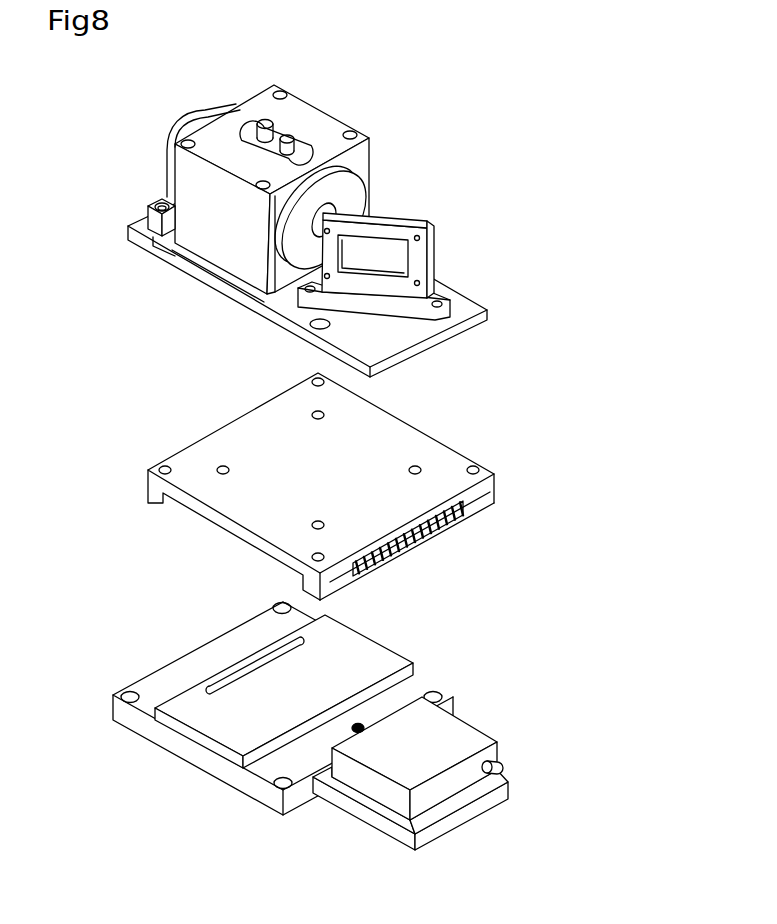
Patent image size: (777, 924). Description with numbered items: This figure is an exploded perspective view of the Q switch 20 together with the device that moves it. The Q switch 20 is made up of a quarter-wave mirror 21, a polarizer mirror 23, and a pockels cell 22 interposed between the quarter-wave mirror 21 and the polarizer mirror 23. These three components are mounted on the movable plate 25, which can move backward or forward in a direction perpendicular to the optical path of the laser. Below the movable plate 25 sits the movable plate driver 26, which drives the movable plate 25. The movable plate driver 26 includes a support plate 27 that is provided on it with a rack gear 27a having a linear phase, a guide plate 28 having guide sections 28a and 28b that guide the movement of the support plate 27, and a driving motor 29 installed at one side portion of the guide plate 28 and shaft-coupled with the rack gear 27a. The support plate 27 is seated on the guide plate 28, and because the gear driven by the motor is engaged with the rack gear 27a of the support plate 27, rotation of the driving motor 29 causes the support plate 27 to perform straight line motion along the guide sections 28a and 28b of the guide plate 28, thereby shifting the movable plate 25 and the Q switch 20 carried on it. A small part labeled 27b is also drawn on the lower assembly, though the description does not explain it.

The Q switch 20 is at (371, 483).
The quarter-wave mirror 21 is at (180, 136).
The pockels cell 22 is at (232, 205).
The polarizer mirror 23 is at (353, 300).
The movable plate 25 is at (400, 327).
The movable plate driver 26 is at (401, 627).
The support plate 27 is at (322, 499).
The rack gear 27a is at (372, 567).
The fixing screw 27b is at (358, 732).
The guide plate 28 is at (283, 712).
The guide section 28a is at (192, 690).
The guide section 28b is at (318, 723).
The driving motor 29 is at (457, 783).